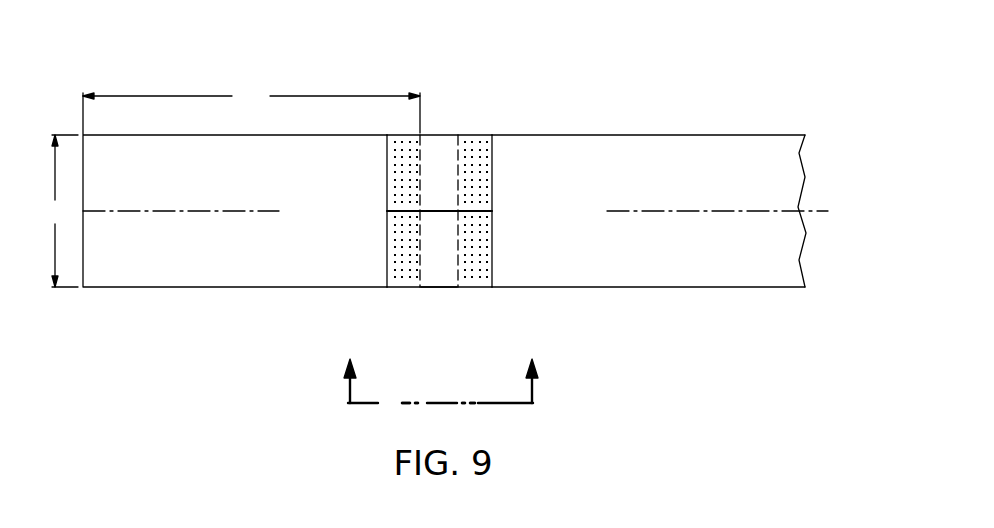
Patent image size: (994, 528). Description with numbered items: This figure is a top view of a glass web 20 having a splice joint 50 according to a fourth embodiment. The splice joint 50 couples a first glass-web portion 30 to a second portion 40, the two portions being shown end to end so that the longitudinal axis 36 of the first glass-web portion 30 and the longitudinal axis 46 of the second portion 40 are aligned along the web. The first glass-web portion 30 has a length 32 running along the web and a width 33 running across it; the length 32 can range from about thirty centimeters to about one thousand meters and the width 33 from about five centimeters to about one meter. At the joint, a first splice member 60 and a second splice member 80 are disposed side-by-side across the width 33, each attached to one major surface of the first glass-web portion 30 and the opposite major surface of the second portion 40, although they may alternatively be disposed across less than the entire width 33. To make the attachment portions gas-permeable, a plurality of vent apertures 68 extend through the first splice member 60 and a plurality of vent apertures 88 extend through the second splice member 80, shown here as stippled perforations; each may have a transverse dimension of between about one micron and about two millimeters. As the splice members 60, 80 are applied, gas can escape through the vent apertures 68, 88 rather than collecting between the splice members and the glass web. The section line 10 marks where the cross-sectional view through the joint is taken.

The section line 10 is at (439, 359).
The glass web 20 is at (455, 183).
The first glass-web portion 30 is at (202, 288).
The length 32 is at (251, 108).
The width 33 is at (59, 211).
The longitudinal axis 36 is at (179, 211).
The second portion 40 is at (692, 288).
The longitudinal axis 46 is at (674, 211).
The splice joint 50 is at (470, 308).
The first splice member 60 is at (450, 142).
The vent apertures 68 is at (392, 143).
The second splice member 80 is at (430, 280).
The vent apertures 88 is at (487, 217).